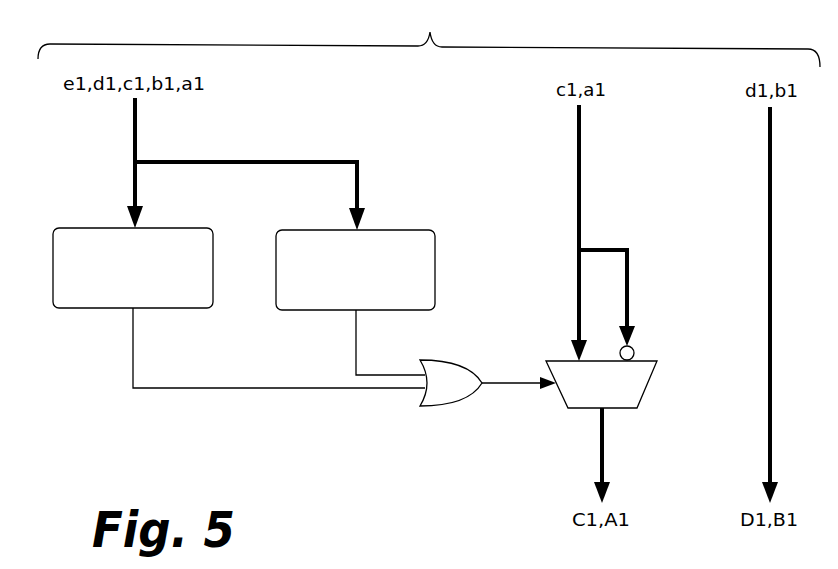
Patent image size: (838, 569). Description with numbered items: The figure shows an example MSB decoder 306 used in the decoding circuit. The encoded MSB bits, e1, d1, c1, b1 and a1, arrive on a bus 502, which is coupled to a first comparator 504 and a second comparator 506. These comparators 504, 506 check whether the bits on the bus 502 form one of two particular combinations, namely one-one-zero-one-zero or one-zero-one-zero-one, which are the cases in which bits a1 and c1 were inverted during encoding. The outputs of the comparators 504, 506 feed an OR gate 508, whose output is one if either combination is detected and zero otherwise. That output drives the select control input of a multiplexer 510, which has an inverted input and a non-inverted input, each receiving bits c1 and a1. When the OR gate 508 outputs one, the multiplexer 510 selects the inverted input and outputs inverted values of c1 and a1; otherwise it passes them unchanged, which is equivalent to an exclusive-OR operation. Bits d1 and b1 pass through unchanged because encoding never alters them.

The MSB decoder 306 is at (429, 38).
The bus 502 is at (303, 161).
The first comparator 504 is at (83, 226).
The second comparator 506 is at (305, 228).
The OR gate 508 is at (433, 408).
The multiplexer 510 is at (549, 357).